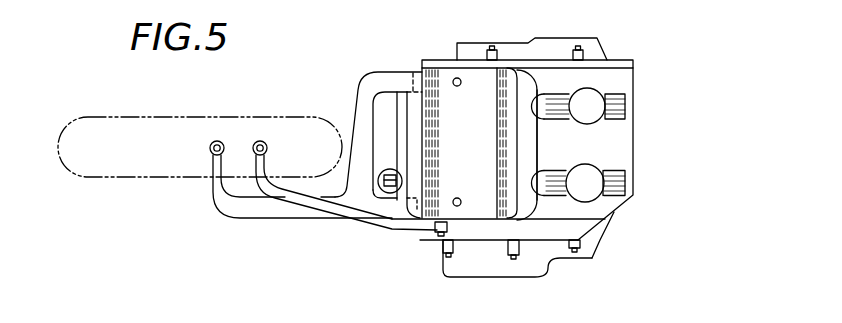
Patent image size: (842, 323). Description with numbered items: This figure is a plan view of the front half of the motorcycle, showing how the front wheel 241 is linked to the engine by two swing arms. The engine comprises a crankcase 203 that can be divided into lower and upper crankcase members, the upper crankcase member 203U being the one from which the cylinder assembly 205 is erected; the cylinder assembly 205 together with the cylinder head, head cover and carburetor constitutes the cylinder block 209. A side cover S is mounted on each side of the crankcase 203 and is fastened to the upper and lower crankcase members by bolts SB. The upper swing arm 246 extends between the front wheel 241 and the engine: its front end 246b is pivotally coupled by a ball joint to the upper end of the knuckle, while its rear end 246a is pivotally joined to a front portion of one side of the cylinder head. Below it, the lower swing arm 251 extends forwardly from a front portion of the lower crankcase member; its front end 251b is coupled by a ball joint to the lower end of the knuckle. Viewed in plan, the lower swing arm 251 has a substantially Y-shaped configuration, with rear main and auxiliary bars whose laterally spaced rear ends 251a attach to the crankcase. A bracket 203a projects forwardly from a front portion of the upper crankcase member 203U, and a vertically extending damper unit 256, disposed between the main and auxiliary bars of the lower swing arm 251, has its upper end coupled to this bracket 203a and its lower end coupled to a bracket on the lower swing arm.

The front wheel 241 is at (182, 116).
The front end of lower swing arm 251b is at (222, 163).
The front end of upper swing arm 246b is at (266, 168).
The lower swing arm 251 is at (288, 228).
The rear ends of lower swing arm 251a is at (408, 83).
The bracket 203a is at (392, 191).
The damper unit 256 is at (393, 167).
The upper swing arm 246 is at (377, 238).
The rear end of upper swing arm 246a is at (441, 237).
The cylinder block 209 is at (442, 52).
The side cover S is at (597, 50).
The bolts SB is at (577, 50).
The crankcase 203 is at (645, 160).
The upper crankcase member 203U is at (618, 78).
The cylinder assembly 205 is at (590, 113).